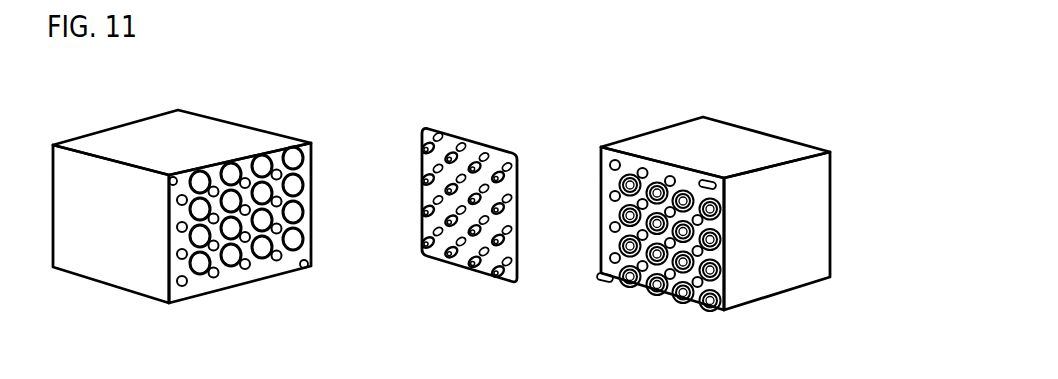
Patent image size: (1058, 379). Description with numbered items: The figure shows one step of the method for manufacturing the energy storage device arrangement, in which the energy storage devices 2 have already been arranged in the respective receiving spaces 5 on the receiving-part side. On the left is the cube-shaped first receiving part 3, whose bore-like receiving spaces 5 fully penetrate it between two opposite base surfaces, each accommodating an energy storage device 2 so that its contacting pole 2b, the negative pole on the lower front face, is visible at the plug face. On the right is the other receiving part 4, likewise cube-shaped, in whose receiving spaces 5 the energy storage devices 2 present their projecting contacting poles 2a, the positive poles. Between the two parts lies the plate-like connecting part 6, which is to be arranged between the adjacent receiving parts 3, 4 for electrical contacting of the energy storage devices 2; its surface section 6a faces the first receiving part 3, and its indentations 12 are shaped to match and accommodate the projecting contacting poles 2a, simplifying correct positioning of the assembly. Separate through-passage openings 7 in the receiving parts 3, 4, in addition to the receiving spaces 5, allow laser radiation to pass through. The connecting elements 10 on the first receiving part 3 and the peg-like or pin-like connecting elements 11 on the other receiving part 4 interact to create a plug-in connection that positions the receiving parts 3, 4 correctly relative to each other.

The energy storage device 2 is at (300, 175).
The contacting pole 2a is at (707, 307).
The contacting pole 2b is at (293, 185).
The first receiving part 3 is at (92, 270).
The other receiving part 4 is at (745, 297).
The receiving space 5 is at (318, 234).
The connecting part 6 is at (412, 121).
The surface section 6a is at (443, 254).
The through-passage opening 7 is at (172, 210).
The connecting element 10 is at (171, 177).
The connecting element 11 is at (713, 180).
The indentation 12 is at (485, 153).